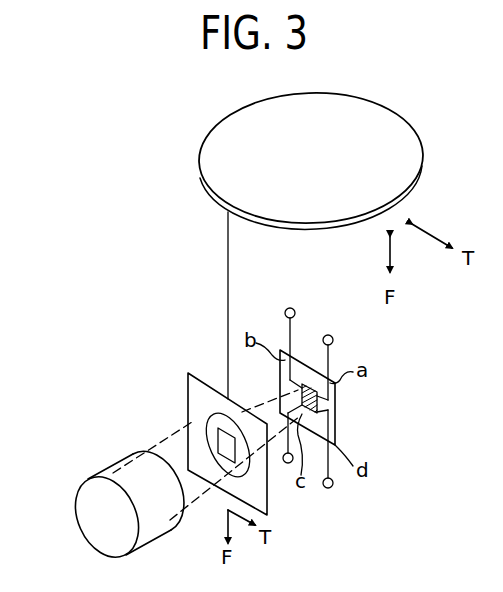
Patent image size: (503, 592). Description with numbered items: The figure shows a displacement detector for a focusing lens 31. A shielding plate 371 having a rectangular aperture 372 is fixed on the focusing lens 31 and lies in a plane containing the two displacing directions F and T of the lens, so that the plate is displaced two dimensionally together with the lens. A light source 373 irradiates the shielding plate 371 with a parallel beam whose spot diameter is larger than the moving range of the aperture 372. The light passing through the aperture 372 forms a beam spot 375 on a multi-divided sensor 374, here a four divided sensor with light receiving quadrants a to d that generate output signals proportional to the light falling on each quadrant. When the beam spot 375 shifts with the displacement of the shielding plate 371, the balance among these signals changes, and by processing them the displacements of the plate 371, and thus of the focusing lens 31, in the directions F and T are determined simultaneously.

The focusing lens 31 is at (398, 140).
The shielding plate 371 is at (197, 390).
The rectangular aperture 372 is at (207, 438).
The light source 373 is at (120, 478).
The multi-divided sensor 374 is at (328, 402).
The beam spot 375 is at (328, 436).